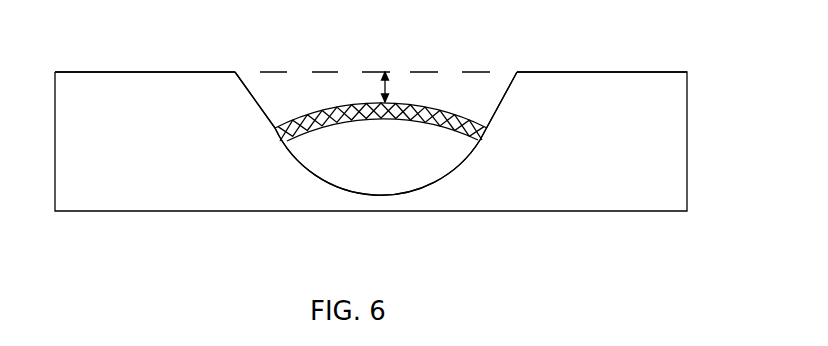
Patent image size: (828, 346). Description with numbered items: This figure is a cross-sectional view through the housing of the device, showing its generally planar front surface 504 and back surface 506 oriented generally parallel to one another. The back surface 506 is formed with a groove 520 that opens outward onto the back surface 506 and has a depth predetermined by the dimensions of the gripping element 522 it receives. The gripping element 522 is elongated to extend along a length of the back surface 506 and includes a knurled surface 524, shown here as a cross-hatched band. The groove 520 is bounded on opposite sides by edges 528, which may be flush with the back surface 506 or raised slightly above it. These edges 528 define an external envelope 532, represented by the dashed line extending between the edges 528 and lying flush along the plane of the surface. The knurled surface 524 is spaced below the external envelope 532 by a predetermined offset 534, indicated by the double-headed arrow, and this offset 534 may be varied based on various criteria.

The front surface 504 is at (563, 212).
The back surface 506 is at (612, 72).
The groove 520 is at (432, 183).
The gripping element 522 is at (367, 171).
The knurled surface 524 is at (292, 143).
The edges 528 is at (236, 72).
The external envelope 532 is at (270, 71).
The offset 534 is at (392, 84).